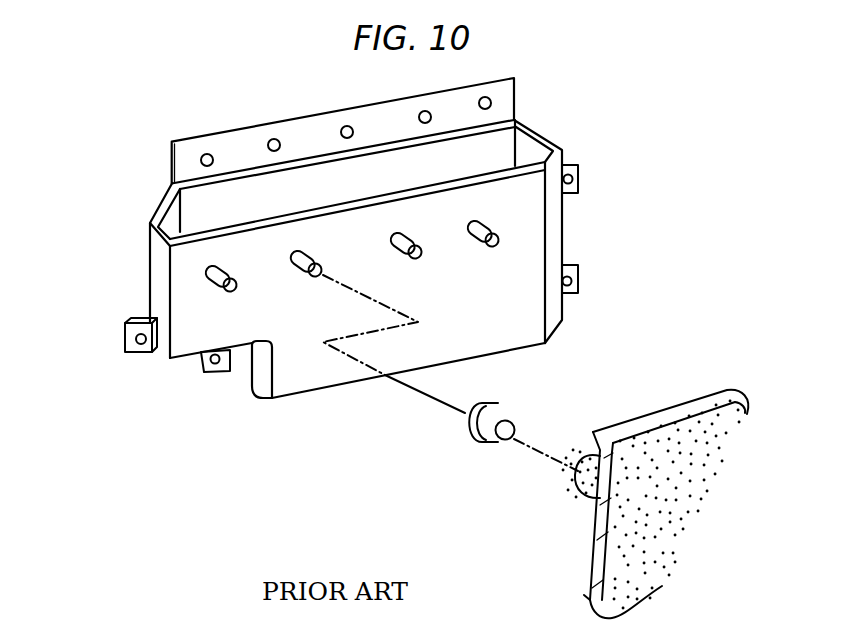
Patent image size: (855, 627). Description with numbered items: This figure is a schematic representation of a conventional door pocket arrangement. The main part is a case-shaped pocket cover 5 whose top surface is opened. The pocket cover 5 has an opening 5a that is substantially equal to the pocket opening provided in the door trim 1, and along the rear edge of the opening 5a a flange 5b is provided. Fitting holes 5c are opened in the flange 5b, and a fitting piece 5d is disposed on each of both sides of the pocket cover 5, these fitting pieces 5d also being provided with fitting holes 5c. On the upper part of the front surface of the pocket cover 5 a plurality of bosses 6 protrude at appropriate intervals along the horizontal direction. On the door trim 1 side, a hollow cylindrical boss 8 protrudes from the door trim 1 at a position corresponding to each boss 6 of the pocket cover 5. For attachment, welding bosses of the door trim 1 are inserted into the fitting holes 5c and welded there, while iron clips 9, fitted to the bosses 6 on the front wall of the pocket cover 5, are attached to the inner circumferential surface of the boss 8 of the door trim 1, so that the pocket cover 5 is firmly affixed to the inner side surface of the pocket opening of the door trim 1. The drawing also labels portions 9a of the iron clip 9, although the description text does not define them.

The door trim 1 is at (590, 578).
The pocket cover 5 is at (240, 407).
The opening 5a is at (347, 158).
The flange 5b is at (176, 166).
The fitting hole 5c is at (272, 141).
The fitting piece 5d is at (578, 166).
The boss 6 is at (238, 292).
The hollow cylindrical boss 8 is at (583, 498).
The iron clip 9 is at (466, 427).
The rivet head 9a is at (511, 418).